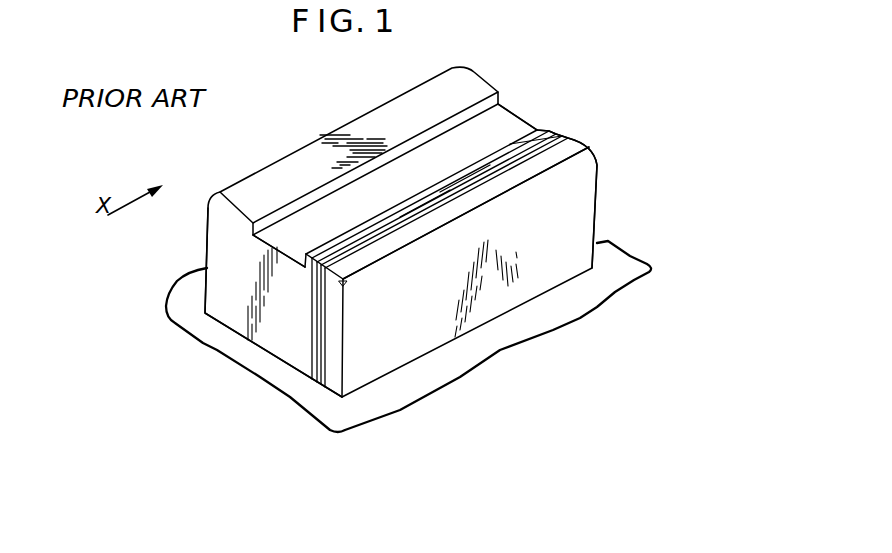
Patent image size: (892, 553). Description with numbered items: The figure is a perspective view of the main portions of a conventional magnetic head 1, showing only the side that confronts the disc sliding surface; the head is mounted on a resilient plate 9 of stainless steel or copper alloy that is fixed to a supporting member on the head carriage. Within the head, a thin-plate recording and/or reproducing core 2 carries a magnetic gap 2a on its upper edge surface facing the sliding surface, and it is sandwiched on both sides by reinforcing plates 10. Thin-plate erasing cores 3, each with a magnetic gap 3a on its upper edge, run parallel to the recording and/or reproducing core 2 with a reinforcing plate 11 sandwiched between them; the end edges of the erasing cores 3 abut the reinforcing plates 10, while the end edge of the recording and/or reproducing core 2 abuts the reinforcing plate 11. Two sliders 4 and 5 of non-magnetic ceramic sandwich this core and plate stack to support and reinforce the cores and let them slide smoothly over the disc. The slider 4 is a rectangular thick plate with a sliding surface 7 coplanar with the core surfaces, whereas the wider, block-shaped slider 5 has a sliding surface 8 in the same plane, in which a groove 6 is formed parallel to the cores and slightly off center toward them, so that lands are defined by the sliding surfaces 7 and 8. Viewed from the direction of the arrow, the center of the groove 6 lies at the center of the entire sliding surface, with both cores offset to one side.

The magnetic head 1 is at (598, 212).
The recording and/or reproducing core 2 is at (505, 170).
The magnetic gap 2a is at (462, 190).
The erasing cores 3 is at (425, 215).
The magnetic gaps 3a is at (425, 203).
The slider 4 is at (578, 188).
The slider 5 is at (268, 327).
The groove 6 is at (508, 126).
The sliding surface 7 is at (372, 261).
The sliding surface 8 is at (287, 173).
The resilient plate 9 is at (510, 337).
The reinforcing plates 10 is at (544, 144).
The reinforcing plate 11 is at (399, 238).